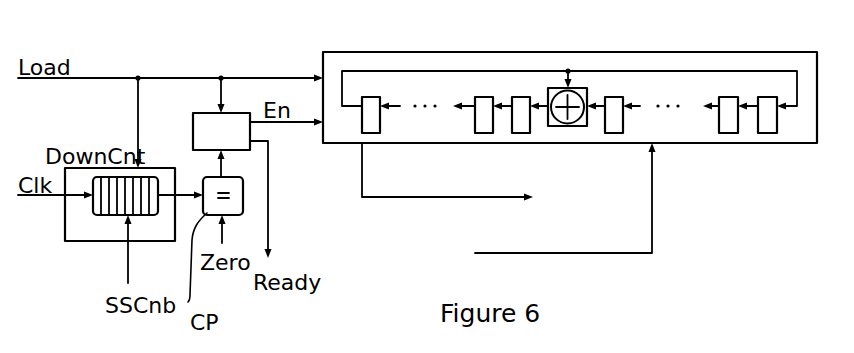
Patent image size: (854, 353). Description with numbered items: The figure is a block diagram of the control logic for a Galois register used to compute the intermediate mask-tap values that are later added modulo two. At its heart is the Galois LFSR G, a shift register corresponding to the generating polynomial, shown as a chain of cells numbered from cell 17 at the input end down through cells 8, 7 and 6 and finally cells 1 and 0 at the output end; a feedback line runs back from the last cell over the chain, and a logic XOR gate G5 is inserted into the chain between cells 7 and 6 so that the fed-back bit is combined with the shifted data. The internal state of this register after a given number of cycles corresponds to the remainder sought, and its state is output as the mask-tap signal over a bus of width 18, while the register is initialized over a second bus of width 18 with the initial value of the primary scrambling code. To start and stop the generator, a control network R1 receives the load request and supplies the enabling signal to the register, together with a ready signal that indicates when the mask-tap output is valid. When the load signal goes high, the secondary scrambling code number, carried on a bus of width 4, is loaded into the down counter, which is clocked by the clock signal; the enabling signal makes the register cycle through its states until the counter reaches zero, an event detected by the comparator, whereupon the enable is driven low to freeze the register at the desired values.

The Galois LFSR G is at (570, 136).
The logic XOR gate G5 is at (580, 90).
The network R1 is at (200, 130).
The LFSR cell 17 is at (369, 104).
The LFSR cell 8 is at (484, 104).
The LFSR cell 7 is at (521, 104).
The LFSR cell 6 is at (614, 104).
The LFSR cell 1 is at (728, 104).
The LFSR cell 0 is at (767, 104).
The 18-bit bus (MaskTaps / PSCInit) 18 is at (402, 187).
The 4-bit bus SSCnb 4 is at (136, 250).